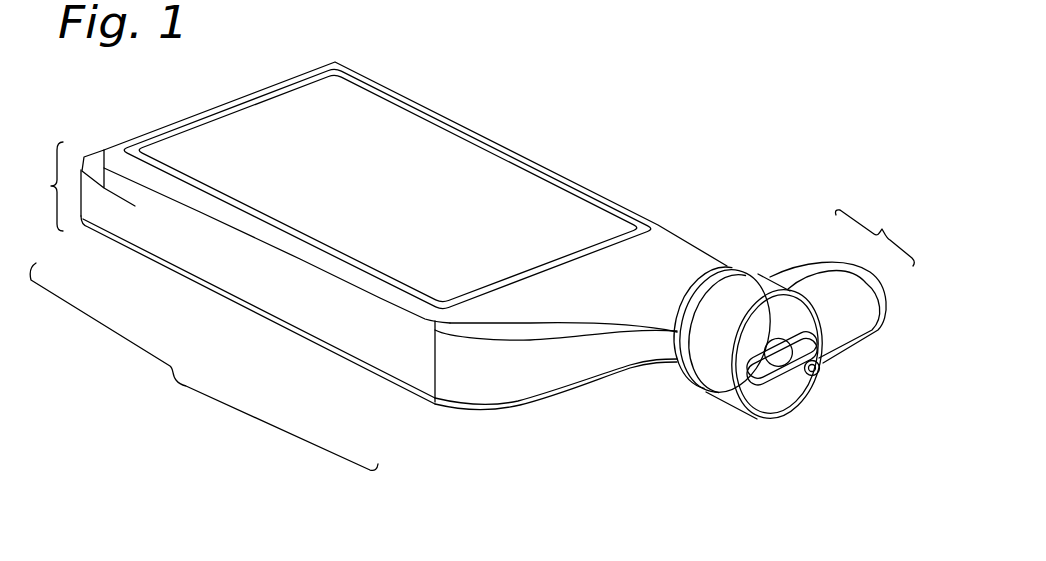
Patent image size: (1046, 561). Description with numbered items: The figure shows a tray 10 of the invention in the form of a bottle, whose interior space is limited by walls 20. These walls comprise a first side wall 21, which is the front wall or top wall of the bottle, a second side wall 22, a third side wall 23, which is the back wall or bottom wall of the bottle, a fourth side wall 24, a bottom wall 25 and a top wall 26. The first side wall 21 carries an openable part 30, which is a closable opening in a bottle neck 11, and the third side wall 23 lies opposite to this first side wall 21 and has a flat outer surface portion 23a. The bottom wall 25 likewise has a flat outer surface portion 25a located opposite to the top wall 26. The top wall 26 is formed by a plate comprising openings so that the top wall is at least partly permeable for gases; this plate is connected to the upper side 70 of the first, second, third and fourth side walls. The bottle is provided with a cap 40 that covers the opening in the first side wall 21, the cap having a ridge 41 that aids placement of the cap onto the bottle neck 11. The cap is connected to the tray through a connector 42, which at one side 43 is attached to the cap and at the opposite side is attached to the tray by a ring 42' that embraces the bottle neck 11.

The tray 10 is at (86, 386).
The bottle neck 11 is at (658, 380).
The walls 20 is at (74, 197).
The first side wall 21 is at (563, 368).
The second side wall 22 is at (243, 283).
The third side wall 23 is at (84, 157).
The flat outer surface portion 23a is at (51, 186).
The fourth side wall 24 is at (517, 148).
The bottom wall 25 is at (268, 316).
The flat outer surface portion 25a is at (177, 380).
The top wall 26 is at (360, 133).
The openable part 30 is at (883, 231).
The cap 40 is at (720, 392).
The ridge 41 is at (784, 370).
The connector 42 is at (845, 318).
The ring 42' is at (725, 308).
The side 43 is at (820, 372).
The upper side 70 is at (592, 198).